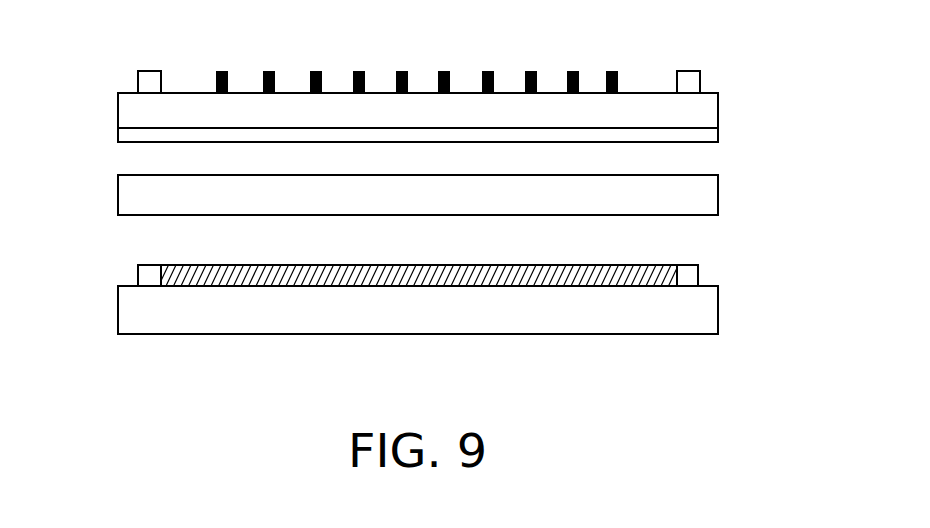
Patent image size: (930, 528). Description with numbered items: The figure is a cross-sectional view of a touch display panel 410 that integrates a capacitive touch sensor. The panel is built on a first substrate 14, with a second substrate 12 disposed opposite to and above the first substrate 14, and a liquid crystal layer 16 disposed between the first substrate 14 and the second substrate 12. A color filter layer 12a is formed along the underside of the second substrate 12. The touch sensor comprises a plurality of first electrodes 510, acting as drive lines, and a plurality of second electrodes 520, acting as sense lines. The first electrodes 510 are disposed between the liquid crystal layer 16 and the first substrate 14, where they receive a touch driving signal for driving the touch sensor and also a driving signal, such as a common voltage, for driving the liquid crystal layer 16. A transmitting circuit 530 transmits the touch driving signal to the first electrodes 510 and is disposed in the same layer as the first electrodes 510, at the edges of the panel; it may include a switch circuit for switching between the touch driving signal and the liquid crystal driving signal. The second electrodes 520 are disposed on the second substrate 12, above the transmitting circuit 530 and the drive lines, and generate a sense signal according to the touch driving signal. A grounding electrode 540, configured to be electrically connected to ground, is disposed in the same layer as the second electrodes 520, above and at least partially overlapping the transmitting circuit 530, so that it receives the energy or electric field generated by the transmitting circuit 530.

The second substrate 12 is at (712, 105).
The color filter layer 12a is at (712, 133).
The first substrate 14 is at (703, 315).
The liquid crystal layer 16 is at (703, 195).
The touch display panel 410 is at (717, 393).
The first electrodes 510 is at (660, 267).
The second electrodes 520 is at (611, 70).
The transmitting circuit 530 is at (143, 270).
The grounding electrode 540 is at (150, 72).